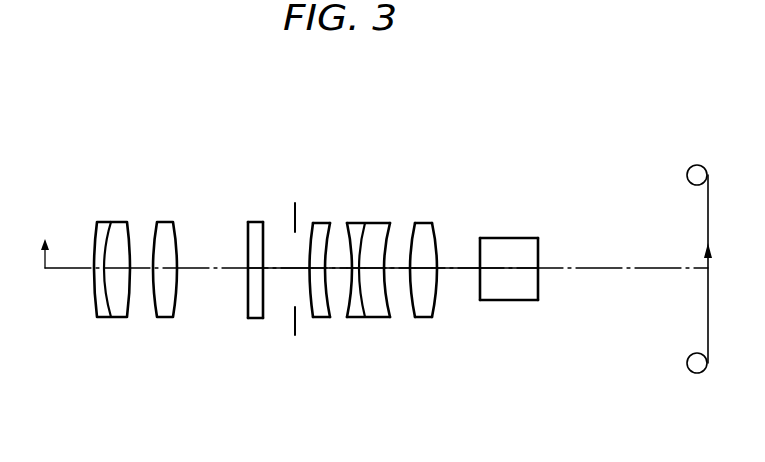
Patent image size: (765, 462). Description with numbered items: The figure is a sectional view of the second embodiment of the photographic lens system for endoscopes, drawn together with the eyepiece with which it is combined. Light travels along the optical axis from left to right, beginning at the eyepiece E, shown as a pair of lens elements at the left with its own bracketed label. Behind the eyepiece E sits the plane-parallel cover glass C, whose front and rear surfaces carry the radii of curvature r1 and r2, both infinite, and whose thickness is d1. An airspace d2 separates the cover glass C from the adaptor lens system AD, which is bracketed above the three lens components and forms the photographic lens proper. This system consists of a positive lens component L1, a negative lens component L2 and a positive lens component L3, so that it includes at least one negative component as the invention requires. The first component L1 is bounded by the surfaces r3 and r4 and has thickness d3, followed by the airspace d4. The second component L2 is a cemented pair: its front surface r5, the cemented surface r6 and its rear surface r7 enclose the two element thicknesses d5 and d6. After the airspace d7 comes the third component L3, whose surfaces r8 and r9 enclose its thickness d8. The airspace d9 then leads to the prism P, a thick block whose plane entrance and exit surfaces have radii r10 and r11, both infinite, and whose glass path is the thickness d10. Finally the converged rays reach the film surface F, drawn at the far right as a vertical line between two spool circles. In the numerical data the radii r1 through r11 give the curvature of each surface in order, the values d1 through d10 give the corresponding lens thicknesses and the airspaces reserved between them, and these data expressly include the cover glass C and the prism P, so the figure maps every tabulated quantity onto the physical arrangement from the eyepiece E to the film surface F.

The eyepiece E is at (180, 188).
The cover glass C is at (251, 220).
The lens system AD is at (448, 94).
The positive lens component L1 is at (319, 220).
The negative lens component L2 is at (376, 220).
The positive lens component L3 is at (423, 220).
The prism P is at (509, 238).
The film surface F is at (708, 216).
The radius of curvature r1 is at (246, 226).
The radius of curvature r2 is at (265, 228).
The radius of curvature r3 is at (311, 225).
The radius of curvature r4 is at (327, 232).
The radius of curvature r5 is at (348, 225).
The radius of curvature r6 is at (362, 230).
The radius of curvature r7 is at (388, 225).
The radius of curvature r8 is at (411, 232).
The radius of curvature r9 is at (438, 225).
The radius of curvature r10 is at (480, 240).
The radius of curvature r11 is at (540, 250).
The thickness d1 is at (253, 270).
The airspace d2 is at (281, 272).
The thickness d3 is at (319, 264).
The airspace d4 is at (339, 276).
The thickness d5 is at (356, 264).
The thickness d6 is at (378, 276).
The airspace d7 is at (401, 264).
The thickness d8 is at (426, 276).
The airspace d9 is at (456, 273).
The thickness d10 is at (510, 276).